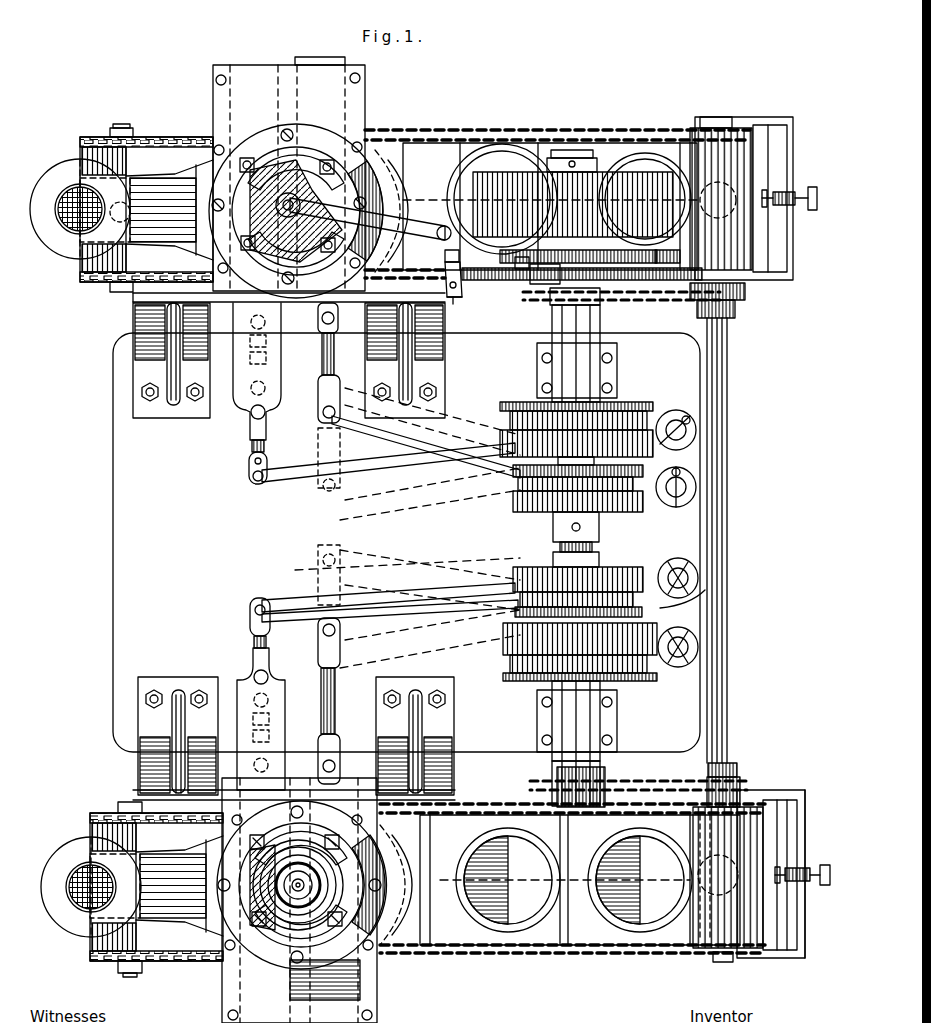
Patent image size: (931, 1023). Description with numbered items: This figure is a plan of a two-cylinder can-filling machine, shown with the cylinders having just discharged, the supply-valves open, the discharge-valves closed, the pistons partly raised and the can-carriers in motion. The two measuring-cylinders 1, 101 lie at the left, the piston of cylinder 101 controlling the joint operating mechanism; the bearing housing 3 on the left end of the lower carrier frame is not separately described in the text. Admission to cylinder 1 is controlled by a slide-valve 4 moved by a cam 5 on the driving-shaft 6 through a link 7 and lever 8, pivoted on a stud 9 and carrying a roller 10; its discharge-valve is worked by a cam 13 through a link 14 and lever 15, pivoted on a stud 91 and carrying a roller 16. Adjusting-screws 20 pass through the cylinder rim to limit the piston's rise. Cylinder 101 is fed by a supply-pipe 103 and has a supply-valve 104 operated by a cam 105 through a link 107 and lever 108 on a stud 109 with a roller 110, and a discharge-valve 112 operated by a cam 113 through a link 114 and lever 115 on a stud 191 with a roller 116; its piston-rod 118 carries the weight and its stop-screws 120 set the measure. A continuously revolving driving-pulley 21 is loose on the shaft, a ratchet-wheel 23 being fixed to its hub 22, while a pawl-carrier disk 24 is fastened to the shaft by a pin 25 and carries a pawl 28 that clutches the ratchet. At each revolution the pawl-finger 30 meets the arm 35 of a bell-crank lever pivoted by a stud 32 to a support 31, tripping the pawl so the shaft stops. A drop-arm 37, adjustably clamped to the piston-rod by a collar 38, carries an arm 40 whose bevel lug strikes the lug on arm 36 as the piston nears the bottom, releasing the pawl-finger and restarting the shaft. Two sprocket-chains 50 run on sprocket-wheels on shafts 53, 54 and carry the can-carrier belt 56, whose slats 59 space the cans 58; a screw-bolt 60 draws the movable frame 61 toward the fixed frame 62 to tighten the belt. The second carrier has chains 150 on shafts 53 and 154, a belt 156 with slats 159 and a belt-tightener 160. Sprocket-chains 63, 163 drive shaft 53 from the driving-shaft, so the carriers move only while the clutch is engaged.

The measuring-cylinder 1 is at (418, 946).
The bearing housing 3 is at (160, 912).
The slide-valve 4 is at (236, 700).
The cam 5 is at (658, 626).
The driving-shaft 6 is at (705, 592).
The link 7 is at (253, 636).
The lever 8 is at (285, 600).
The stud 9 is at (699, 647).
The roller 10 is at (640, 664).
The cam 13 is at (640, 568).
The link 14 is at (340, 690).
The lever 15 is at (455, 606).
The roller 16 is at (542, 572).
The adjusting-screws 20 is at (250, 848).
The driving-pulley 21 is at (630, 175).
The hub 22 is at (578, 247).
The ratchet-wheel 23 is at (667, 257).
The pawl-carrier disk 24 is at (645, 280).
The pin 25 is at (580, 305).
The pawl 28 is at (522, 270).
The pawl-finger 30 is at (520, 282).
The support 31 is at (289, 290).
The stud 32 is at (452, 298).
The arm 35 is at (462, 292).
The arm 36 is at (463, 257).
The drop-arm 37 is at (398, 222).
The collar 38 is at (318, 195).
The arm 40 is at (438, 236).
The sprocket-chains 50 is at (500, 803).
The shaft 53 is at (712, 117).
The shaft 54 is at (138, 975).
The can-carrier belt 56 is at (448, 938).
The cans 58 is at (398, 868).
The slats 59 is at (467, 923).
The screw-bolt 60 is at (800, 868).
The movable frame 61 is at (780, 935).
The fixed frame 62 is at (805, 918).
The sprocket-chain 63 is at (640, 781).
The stud 91 is at (699, 574).
The measuring-cylinder 101 is at (208, 165).
The supply-pipe 103 is at (150, 178).
The supply-valve 104 is at (228, 390).
The cam 105 is at (643, 412).
The link 107 is at (252, 446).
The lever 108 is at (276, 496).
The stud 109 is at (697, 427).
The roller 110 is at (592, 402).
The valve 112 is at (310, 57).
The cam 113 is at (643, 472).
The link 114 is at (338, 404).
The lever 115 is at (390, 460).
The roller 116 is at (520, 493).
The piston-rod 118 is at (290, 198).
The adjusting-screws 120 is at (247, 158).
The sprocket-chains 150 is at (513, 128).
The shaft 154 is at (115, 126).
The belt 156 is at (460, 158).
The slats 159 is at (438, 155).
The belt-tightener 160 is at (793, 192).
The sprocket-chain 163 is at (738, 300).
The stud 191 is at (697, 487).